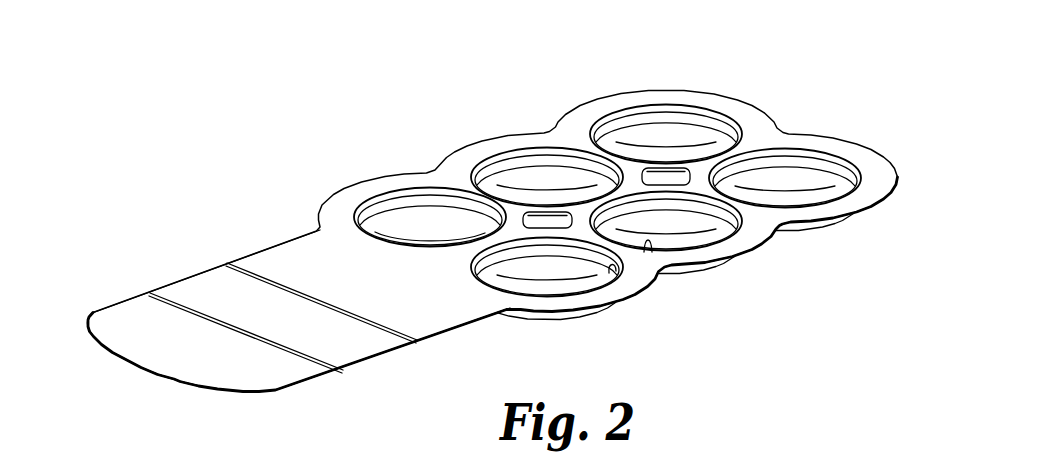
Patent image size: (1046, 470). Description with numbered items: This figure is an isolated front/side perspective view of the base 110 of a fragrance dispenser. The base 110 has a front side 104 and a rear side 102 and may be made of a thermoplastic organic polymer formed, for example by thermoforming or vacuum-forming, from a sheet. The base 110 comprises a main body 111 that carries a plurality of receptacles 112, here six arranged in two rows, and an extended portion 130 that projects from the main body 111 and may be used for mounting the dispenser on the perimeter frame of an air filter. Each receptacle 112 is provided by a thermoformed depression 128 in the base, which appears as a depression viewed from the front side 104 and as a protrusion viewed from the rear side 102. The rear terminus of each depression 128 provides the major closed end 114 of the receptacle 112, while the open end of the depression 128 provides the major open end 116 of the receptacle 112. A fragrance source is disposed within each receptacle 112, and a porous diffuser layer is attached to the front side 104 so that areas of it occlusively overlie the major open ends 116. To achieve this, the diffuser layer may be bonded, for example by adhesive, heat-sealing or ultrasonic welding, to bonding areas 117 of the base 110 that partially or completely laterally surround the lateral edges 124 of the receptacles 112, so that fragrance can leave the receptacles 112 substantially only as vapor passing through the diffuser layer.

The rear side 102 is at (808, 293).
The front side 104 is at (410, 142).
The base 110 is at (816, 48).
The main body 111 is at (762, 133).
The receptacle 112 is at (652, 148).
The major closed end 114 is at (678, 243).
The major open end 116 is at (690, 96).
The bonding area 117 is at (340, 210).
The lateral edges 124 is at (649, 246).
The thermoformed depression 128 is at (807, 231).
The extended portion 130 is at (205, 288).